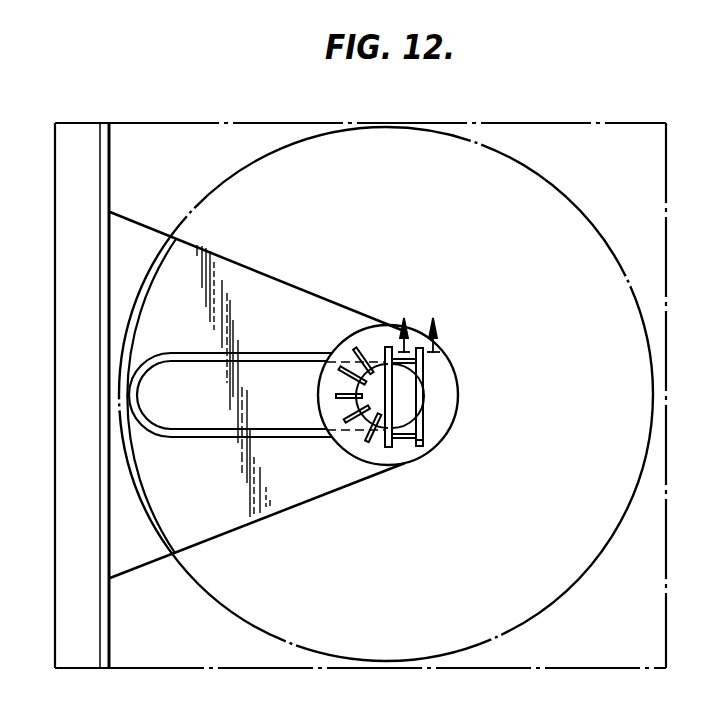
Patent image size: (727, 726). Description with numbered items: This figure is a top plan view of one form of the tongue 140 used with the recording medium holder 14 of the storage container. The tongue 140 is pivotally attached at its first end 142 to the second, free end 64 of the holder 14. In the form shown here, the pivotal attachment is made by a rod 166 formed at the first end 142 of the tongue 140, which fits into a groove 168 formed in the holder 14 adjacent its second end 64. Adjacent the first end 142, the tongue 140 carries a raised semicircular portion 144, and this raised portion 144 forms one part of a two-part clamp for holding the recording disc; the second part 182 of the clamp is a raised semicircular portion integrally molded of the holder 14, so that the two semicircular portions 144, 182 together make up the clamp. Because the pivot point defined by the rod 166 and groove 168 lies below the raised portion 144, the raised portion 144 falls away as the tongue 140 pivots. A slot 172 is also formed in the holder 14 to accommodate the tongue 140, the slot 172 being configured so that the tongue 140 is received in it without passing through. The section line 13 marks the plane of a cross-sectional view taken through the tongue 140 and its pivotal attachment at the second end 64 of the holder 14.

The section line 13- 13 is at (415, 323).
The recording medium holder 14 is at (292, 482).
The second end of the holder 64 is at (459, 388).
The tongue 140 is at (275, 372).
The first end of the tongue 142 is at (407, 450).
The raised semicircular portion 144 is at (407, 398).
The rod 166 is at (425, 438).
The groove 168 is at (424, 368).
The slot 172 is at (200, 418).
The second part of the clamp 182 is at (378, 402).